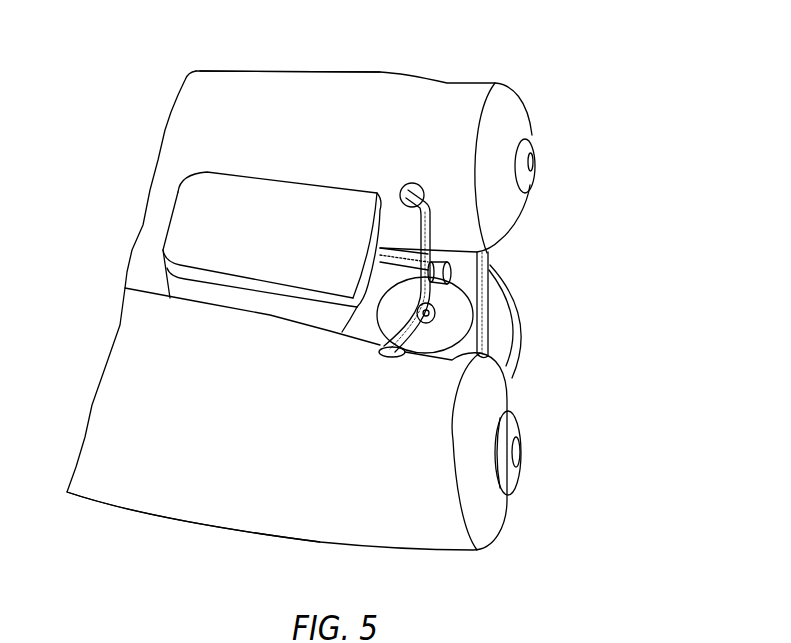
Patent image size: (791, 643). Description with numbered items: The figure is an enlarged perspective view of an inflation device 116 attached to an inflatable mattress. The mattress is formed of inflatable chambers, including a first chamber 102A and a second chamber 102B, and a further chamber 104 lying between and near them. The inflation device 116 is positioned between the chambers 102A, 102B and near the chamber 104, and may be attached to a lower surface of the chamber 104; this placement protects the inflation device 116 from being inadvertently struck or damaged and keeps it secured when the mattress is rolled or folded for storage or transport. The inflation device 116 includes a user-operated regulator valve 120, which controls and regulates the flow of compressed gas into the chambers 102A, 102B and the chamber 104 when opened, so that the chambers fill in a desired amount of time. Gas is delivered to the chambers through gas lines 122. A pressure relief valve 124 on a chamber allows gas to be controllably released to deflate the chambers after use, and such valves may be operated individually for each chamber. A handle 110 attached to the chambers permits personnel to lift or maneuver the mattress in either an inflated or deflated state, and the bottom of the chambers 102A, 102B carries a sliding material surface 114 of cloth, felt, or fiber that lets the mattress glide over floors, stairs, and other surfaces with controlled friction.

The chamber 102A is at (308, 427).
The chamber 102B is at (385, 125).
The chamber 104 is at (483, 303).
The handle 110 is at (510, 337).
The sliding material surface 114 is at (283, 80).
The inflation device 116 is at (450, 235).
The regulator valve 120 is at (279, 187).
The gas line 122 is at (412, 183).
The pressure relief valve 124 is at (513, 475).